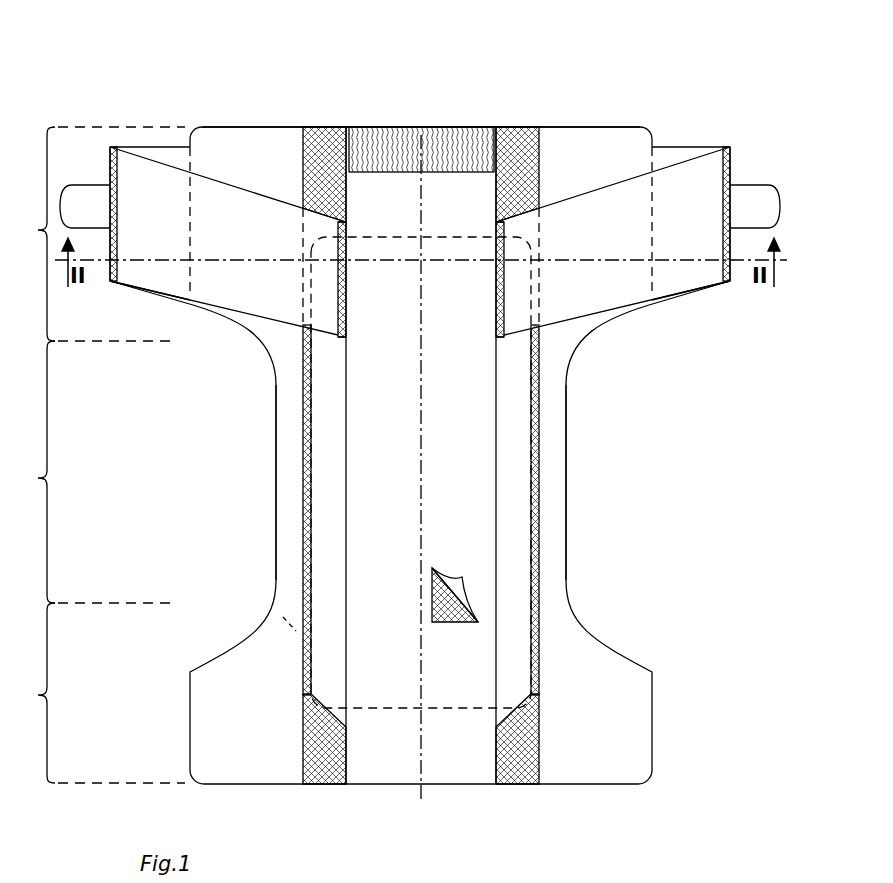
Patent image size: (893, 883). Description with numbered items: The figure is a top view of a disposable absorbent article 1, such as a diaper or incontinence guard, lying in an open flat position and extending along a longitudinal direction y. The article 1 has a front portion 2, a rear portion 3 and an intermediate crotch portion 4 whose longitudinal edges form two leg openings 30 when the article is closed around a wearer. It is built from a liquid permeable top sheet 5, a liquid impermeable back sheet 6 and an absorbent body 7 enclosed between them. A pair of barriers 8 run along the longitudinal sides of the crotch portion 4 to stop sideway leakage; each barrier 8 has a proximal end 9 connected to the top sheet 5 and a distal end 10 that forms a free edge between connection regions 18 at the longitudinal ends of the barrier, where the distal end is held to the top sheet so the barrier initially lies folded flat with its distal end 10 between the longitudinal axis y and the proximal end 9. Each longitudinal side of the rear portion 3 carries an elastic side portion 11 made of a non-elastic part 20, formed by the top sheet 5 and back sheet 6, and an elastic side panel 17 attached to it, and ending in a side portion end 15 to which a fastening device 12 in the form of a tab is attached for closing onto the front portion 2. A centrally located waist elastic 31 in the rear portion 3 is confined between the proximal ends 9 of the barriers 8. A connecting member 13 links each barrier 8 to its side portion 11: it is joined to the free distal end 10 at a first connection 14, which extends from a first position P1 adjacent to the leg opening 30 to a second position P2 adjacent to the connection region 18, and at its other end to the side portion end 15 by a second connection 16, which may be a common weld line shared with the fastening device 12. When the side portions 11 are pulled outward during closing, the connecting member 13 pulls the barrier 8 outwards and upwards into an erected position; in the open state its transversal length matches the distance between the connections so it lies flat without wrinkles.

The disposable absorbent article 1 is at (228, 51).
The front portion 2 is at (103, 693).
The rear portion 3 is at (103, 234).
The crotch portion 4 is at (98, 472).
The top sheet 5 is at (448, 582).
The back sheet 6 is at (280, 615).
The absorbent body 7 is at (450, 612).
The barrier 8 is at (325, 515).
The proximal end 9 is at (305, 455).
The distal end 10 is at (347, 440).
The side portion 11 is at (229, 140).
The fastening device 12 is at (82, 196).
The connecting member 13 is at (262, 300).
The first connection 14 is at (345, 295).
The side portion end 15 is at (100, 272).
The second connection 16 is at (113, 218).
The elastic side panel 17 is at (160, 152).
The connection region 18 is at (323, 140).
The non-elastic part 20 is at (265, 155).
The leg opening 30 is at (276, 440).
The waist elastic 31 is at (440, 150).
The first position P1 is at (348, 337).
The second position P2 is at (350, 222).
The longitudinal direction y is at (419, 809).